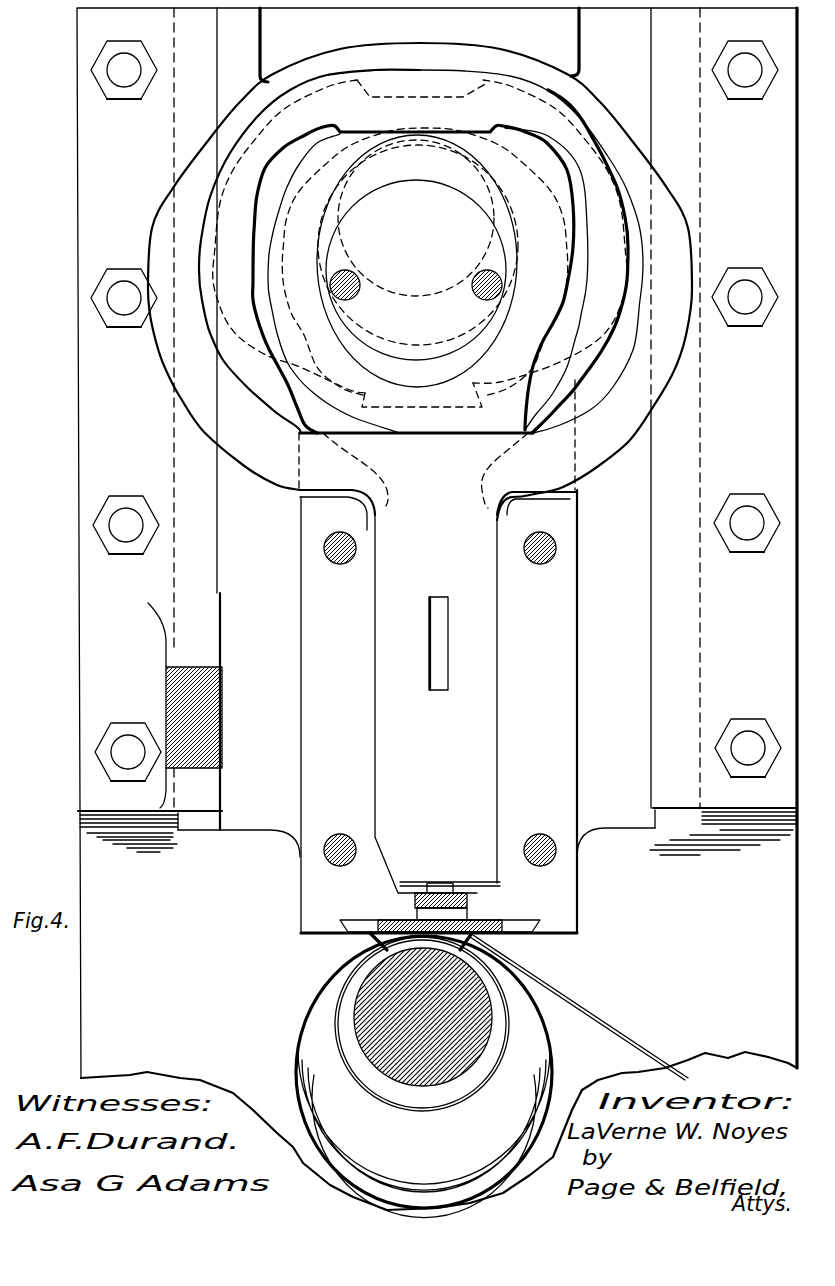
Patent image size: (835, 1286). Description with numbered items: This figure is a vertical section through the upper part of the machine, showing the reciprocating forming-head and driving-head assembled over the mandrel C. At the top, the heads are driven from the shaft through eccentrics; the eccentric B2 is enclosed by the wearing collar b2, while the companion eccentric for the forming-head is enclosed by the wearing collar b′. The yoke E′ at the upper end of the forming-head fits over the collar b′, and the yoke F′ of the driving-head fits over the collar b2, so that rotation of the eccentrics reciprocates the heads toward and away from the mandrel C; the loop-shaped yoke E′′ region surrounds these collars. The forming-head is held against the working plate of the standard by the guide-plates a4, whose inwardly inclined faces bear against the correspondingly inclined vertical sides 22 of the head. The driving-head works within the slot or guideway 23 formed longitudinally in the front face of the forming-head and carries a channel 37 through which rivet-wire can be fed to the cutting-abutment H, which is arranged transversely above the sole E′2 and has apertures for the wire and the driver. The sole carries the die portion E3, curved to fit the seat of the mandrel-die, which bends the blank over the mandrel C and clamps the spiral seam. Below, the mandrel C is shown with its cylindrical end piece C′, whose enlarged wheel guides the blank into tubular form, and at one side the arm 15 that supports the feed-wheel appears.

The guide-plates a4 is at (436, 411).
The yoke E′ is at (419, 45).
The yoke loop E′′ is at (578, 118).
The wearing collar b′ is at (320, 158).
The wearing collar b2 is at (332, 214).
The eccentric B2 is at (417, 261).
The yoke F′ is at (439, 711).
The slot or guideway 23 is at (377, 747).
The channel 37 is at (437, 650).
The arm 15 is at (197, 713).
The inclined vertical sides 22 is at (205, 823).
The cutting-abutment H is at (467, 903).
The sole E′2 is at (513, 937).
The die portion E3 is at (390, 940).
The mandrel C is at (467, 1010).
The cylindrical end piece C′ is at (424, 1077).